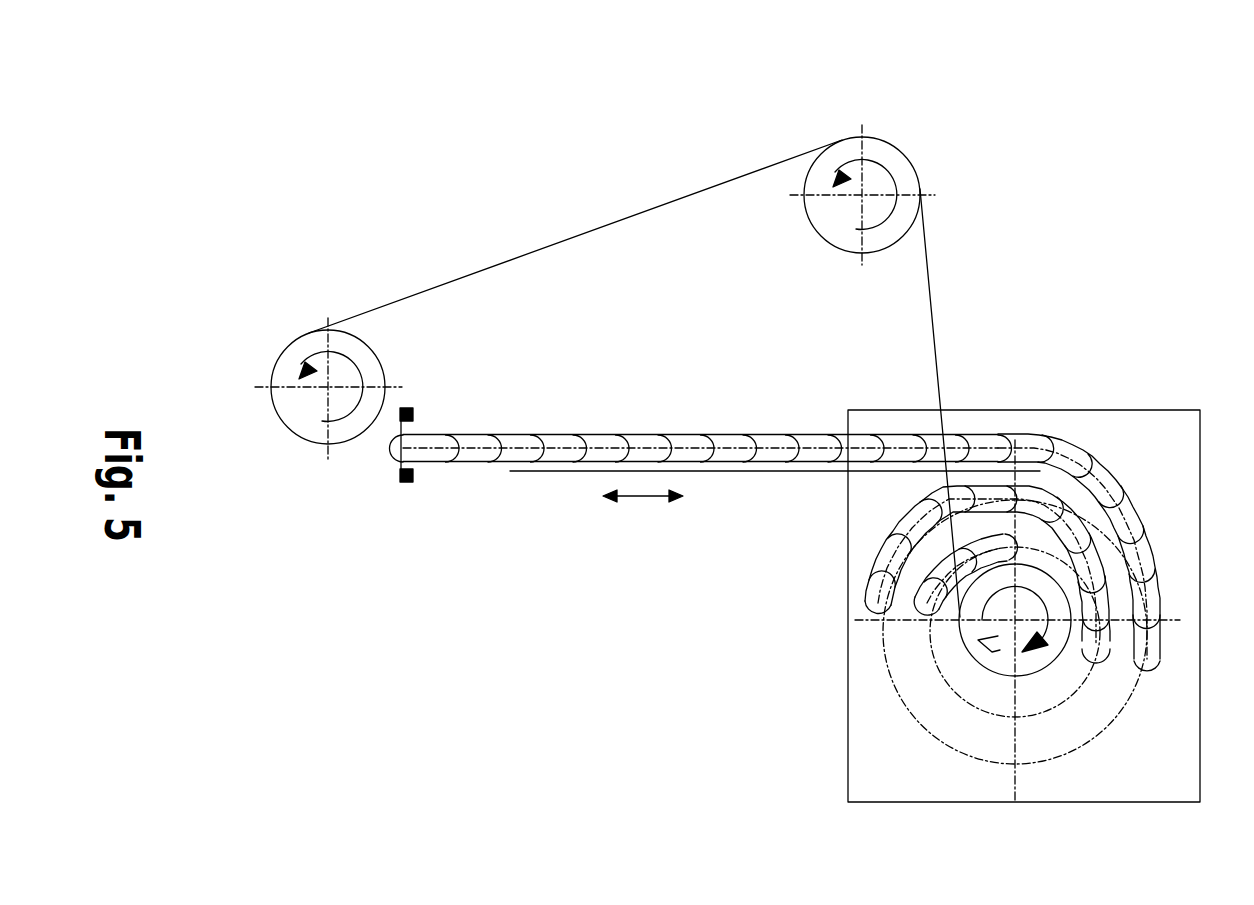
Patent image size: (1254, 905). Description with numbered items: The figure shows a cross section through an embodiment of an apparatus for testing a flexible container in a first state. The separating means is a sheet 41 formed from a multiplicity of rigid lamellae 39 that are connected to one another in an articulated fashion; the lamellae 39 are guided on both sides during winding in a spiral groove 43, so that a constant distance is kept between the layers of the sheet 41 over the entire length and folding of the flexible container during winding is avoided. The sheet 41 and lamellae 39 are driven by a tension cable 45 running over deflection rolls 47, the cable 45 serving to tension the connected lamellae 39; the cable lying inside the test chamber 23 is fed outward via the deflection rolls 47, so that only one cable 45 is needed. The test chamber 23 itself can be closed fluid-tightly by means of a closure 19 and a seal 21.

The closure 19 is at (400, 455).
The seal 21 is at (400, 481).
The test chamber 23 is at (1198, 745).
The lamellae 39 is at (762, 462).
The sheet 41 is at (672, 433).
The spiral groove 43 is at (1092, 737).
The tension cable 45 is at (940, 335).
The deflection rolls 47 is at (885, 160).